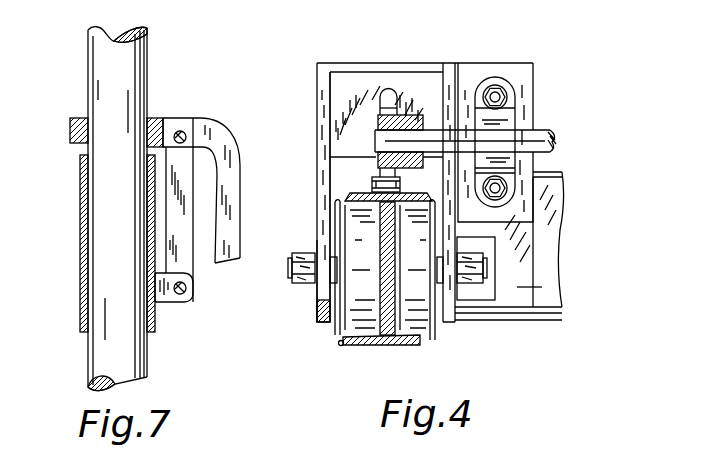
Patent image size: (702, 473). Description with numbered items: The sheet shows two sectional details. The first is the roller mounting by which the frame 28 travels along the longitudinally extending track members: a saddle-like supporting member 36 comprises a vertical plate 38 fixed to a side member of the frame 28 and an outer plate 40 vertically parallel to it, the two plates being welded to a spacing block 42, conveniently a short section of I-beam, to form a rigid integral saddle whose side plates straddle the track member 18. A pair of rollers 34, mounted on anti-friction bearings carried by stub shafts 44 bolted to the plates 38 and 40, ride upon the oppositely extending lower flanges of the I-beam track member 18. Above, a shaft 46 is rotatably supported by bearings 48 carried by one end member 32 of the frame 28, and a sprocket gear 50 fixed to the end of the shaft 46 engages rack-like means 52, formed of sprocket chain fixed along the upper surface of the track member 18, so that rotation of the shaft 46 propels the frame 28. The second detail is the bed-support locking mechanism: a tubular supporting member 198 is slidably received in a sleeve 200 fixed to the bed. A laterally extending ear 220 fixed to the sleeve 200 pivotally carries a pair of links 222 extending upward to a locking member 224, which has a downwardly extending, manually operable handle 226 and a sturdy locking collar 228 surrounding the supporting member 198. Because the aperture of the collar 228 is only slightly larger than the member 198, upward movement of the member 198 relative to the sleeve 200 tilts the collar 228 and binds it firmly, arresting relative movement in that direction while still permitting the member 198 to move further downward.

In FIG. 7, the supporting member 198 is at (97, 90).
In FIG. 7, the locking collar 228 is at (74, 126).
In FIG. 7, the sleeve 200 is at (83, 240).
In FIG. 7, the links 222 is at (185, 178).
In FIG. 7, the locking member 224 is at (200, 125).
In FIG. 7, the handle 226 is at (228, 193).
In FIG. 7, the ear 220 is at (162, 297).
In FIG. 4, the saddle-like supporting member 36 is at (317, 120).
In FIG. 4, the spacing block 42 is at (341, 87).
In FIG. 4, the vertical plate 38 is at (450, 80).
In FIG. 4, the shaft 46 is at (538, 138).
In FIG. 4, the sprocket gear 50 is at (388, 97).
In FIG. 4, the rack-like means 52 is at (372, 183).
In FIG. 4, the track member 18 is at (380, 303).
In FIG. 4, the roller 34 is at (350, 306).
In FIG. 4, the outer plate 40 is at (325, 222).
In FIG. 4, the stub shaft 44 is at (330, 284).
In FIG. 4, the bearing 48 is at (490, 118).
In FIG. 4, the frame 28 is at (510, 239).
In FIG. 4, the end member 32 is at (520, 314).